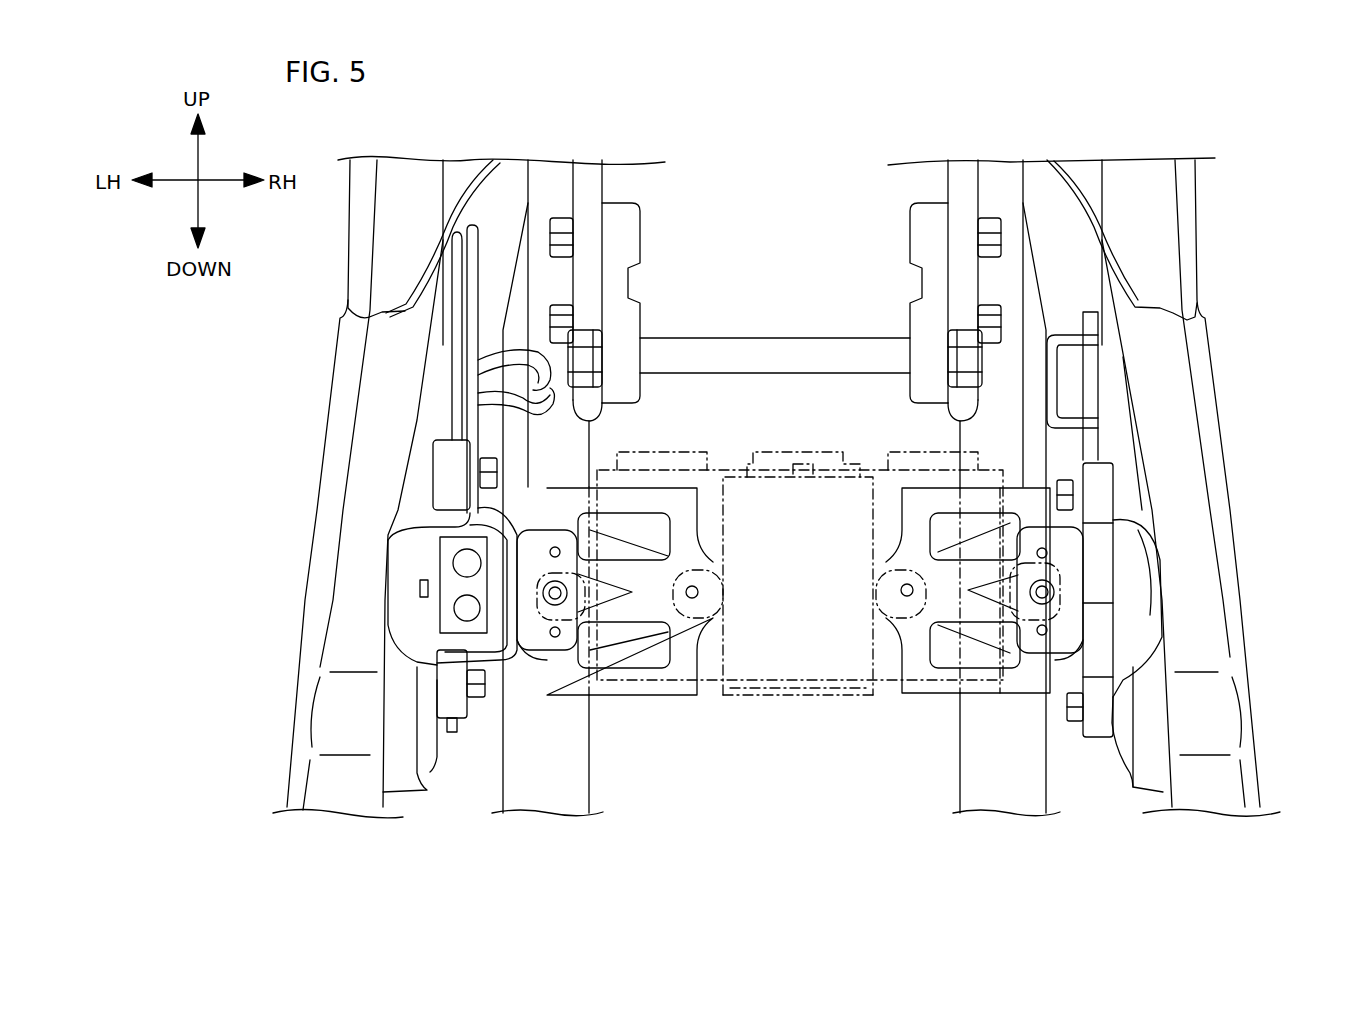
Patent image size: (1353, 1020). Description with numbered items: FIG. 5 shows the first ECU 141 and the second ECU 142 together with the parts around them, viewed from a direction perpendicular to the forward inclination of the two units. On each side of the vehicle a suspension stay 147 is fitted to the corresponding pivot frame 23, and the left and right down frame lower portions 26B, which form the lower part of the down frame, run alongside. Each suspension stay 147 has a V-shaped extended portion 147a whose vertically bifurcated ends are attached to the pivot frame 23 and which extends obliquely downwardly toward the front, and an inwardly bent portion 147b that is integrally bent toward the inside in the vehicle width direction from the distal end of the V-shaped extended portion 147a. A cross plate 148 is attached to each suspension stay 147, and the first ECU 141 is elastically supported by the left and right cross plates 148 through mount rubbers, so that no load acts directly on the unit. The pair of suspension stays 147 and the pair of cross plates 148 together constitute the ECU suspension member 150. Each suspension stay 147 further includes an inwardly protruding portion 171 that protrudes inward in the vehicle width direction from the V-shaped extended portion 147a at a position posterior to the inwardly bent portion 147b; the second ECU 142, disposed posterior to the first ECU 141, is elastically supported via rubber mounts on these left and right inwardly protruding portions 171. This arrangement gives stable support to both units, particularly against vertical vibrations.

The pivot frame 23 is at (342, 462).
The down frame lower portion 26B is at (518, 798).
The first ECU 141 is at (789, 700).
The second ECU 142 is at (848, 683).
The suspension stay 147 is at (452, 730).
The V-shaped extended portion 147a is at (493, 663).
The inwardly bent portion 147b is at (533, 640).
The cross plate 148 is at (660, 489).
The ECU suspension member 150 is at (633, 464).
The inwardly protruding portion 171 is at (573, 600).